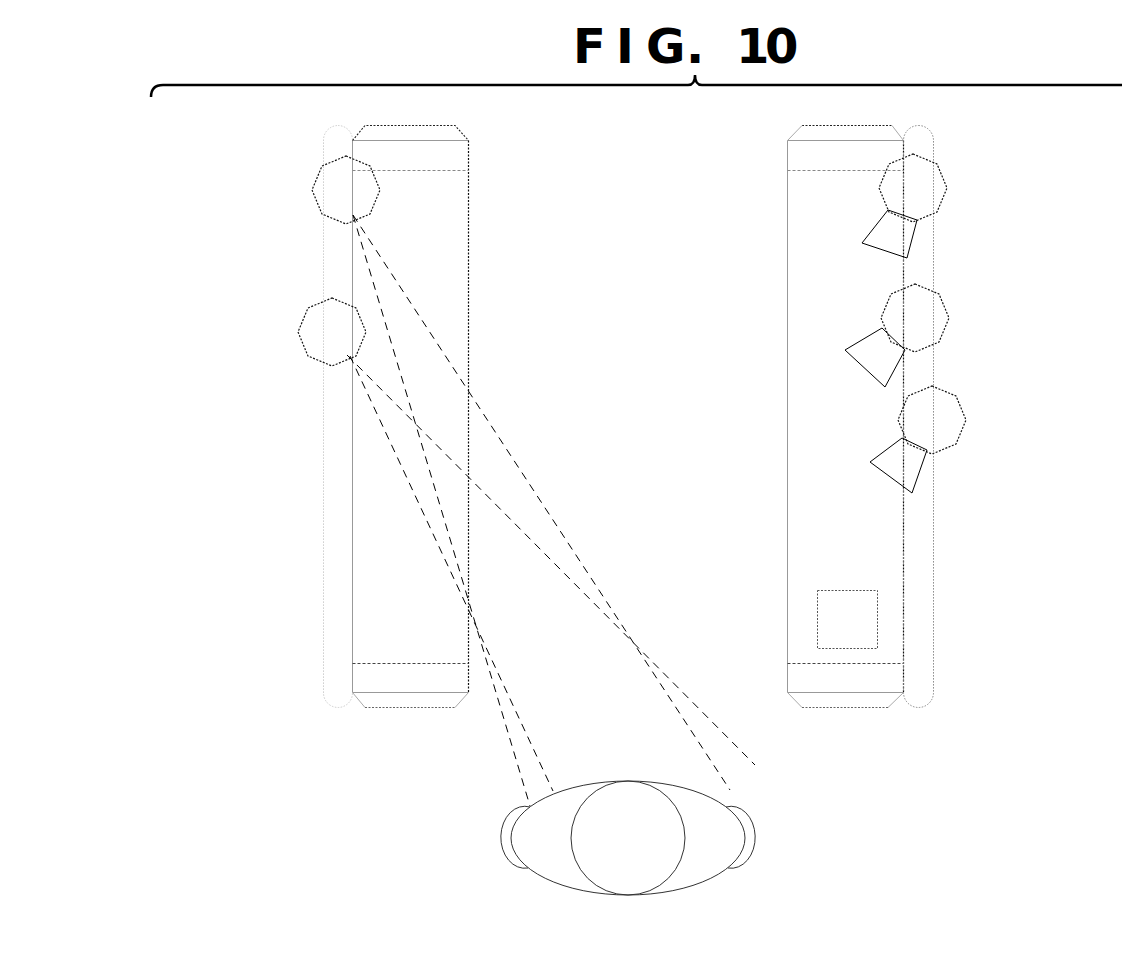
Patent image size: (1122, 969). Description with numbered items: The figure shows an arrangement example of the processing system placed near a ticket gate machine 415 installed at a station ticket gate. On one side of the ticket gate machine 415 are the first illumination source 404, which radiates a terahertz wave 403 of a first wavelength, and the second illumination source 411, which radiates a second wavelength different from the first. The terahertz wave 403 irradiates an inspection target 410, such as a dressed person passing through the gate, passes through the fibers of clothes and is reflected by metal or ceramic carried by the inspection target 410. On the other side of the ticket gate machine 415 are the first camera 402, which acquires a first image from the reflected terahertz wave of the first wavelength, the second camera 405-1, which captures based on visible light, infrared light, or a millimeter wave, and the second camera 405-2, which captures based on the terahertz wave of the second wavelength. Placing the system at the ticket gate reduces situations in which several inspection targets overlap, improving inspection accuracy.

The first camera 402 is at (953, 395).
The terahertz wave 403 is at (469, 417).
The first illumination source 404 is at (313, 188).
The second camera 405-1 is at (947, 186).
The second camera 405-2 is at (948, 312).
The inspection target 410 is at (628, 853).
The second illumination source 411 is at (300, 318).
The ticket gate machine 415 is at (890, 706).